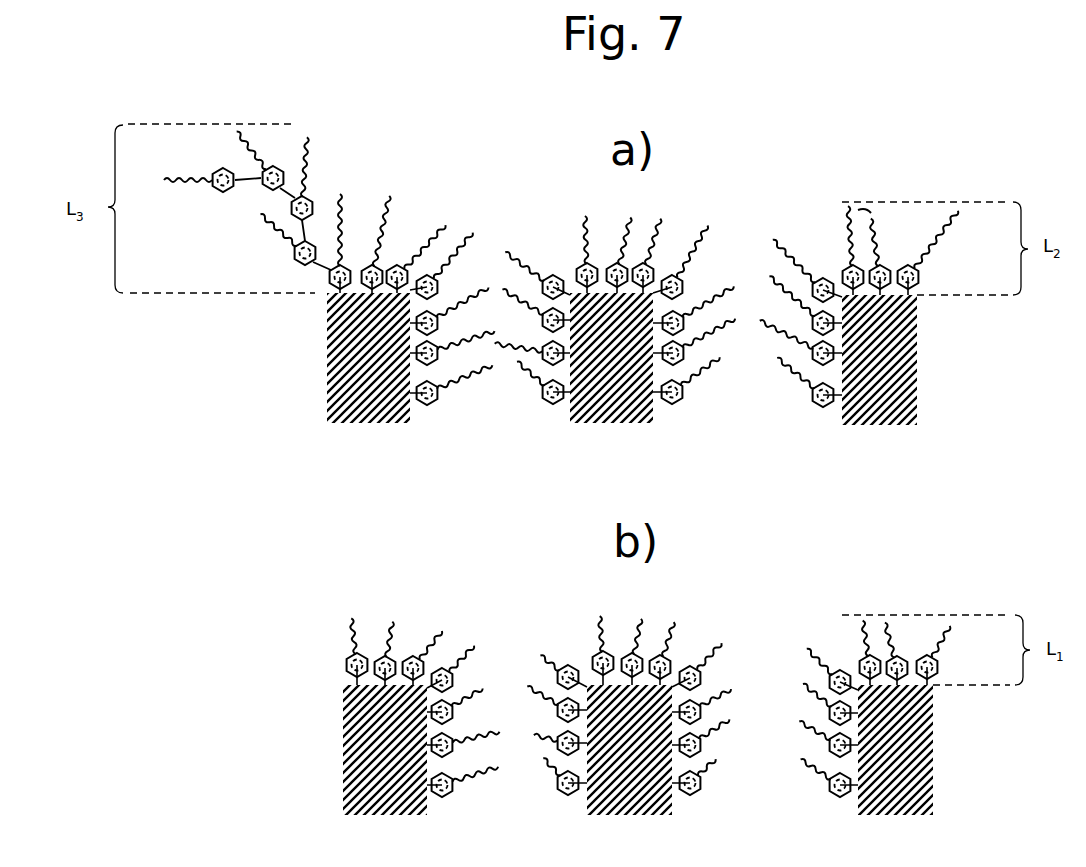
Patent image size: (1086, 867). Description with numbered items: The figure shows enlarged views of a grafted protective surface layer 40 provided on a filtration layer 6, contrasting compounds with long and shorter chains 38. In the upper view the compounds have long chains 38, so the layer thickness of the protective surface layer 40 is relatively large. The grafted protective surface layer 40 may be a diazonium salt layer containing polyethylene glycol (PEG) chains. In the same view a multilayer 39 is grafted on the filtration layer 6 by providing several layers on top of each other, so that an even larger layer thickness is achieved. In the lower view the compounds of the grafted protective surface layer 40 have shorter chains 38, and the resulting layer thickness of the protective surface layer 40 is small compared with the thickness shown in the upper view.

The filtration layer 6 is at (600, 423).
The chains 38 is at (778, 358).
The multilayer 39 is at (325, 136).
The grafted protective surface layer 40 is at (570, 232).